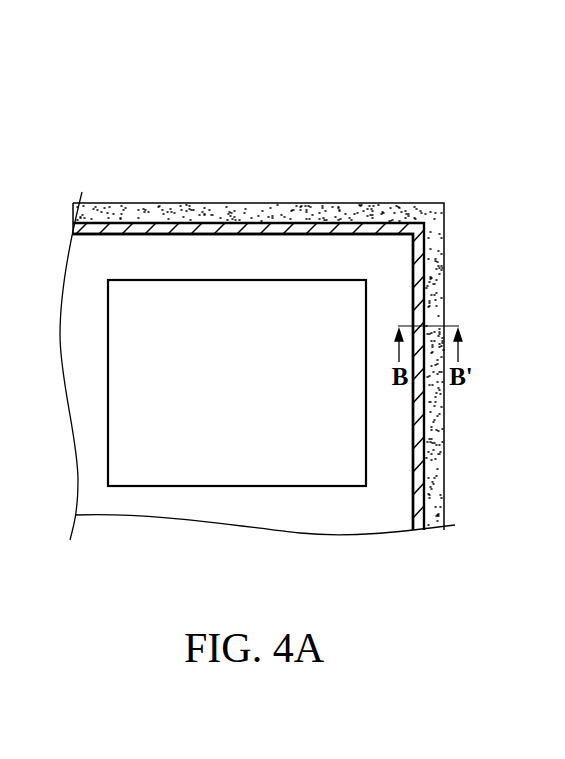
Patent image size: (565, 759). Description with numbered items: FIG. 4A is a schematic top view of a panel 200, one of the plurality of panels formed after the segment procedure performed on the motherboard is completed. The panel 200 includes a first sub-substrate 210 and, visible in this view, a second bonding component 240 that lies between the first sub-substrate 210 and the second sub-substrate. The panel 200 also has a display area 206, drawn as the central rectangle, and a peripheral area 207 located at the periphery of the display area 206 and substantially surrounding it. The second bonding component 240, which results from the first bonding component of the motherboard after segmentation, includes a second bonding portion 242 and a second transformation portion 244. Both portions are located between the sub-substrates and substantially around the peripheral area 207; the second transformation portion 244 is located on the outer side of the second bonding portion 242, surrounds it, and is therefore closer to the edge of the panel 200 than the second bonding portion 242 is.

The panel 200 is at (72, 83).
The display area 206 is at (160, 455).
The peripheral area 207 is at (161, 252).
The first sub-substrate 210 is at (424, 203).
The second bonding component 240 is at (427, 106).
The second bonding portion 242 is at (257, 228).
The second transformation portion 244 is at (380, 215).